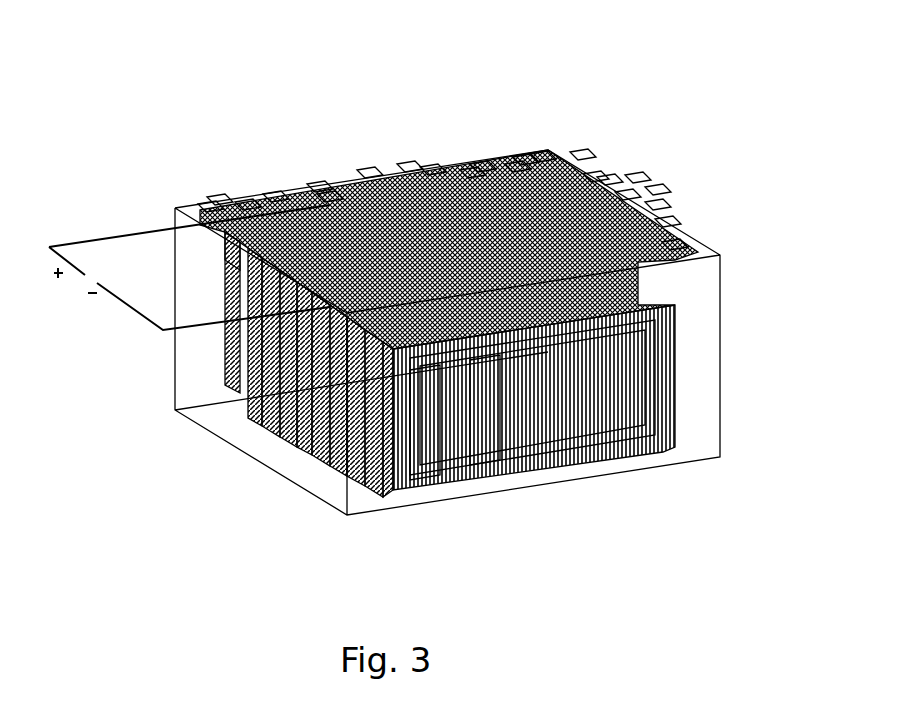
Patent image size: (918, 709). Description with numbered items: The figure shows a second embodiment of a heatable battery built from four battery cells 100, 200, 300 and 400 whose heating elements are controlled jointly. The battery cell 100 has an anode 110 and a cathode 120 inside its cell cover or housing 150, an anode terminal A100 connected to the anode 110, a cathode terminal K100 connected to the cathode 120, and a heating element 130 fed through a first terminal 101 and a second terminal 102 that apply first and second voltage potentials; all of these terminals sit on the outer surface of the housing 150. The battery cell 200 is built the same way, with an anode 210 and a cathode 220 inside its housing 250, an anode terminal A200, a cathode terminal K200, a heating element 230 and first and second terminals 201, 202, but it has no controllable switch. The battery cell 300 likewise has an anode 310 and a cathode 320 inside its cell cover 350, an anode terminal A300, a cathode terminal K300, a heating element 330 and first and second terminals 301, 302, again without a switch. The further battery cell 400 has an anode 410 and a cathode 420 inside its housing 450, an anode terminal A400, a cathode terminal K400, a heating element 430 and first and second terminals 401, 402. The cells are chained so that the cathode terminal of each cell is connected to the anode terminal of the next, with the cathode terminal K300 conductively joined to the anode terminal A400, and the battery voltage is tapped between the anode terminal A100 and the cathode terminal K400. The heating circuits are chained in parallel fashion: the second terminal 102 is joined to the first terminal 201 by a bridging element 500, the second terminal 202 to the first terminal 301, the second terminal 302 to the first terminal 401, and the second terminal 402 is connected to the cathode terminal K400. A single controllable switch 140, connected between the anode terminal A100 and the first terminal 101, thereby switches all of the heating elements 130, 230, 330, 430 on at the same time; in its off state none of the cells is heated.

The battery cell 100 is at (593, 177).
The first terminal 101 is at (317, 187).
The second terminal 102 is at (430, 170).
The anode 110 is at (230, 372).
The cathode 120 is at (270, 415).
The heating element 130 is at (253, 400).
The controllable switch 140 is at (327, 197).
The cell cover / housing 150 is at (580, 155).
The battery cell 200 is at (635, 178).
The first terminal 201 is at (470, 173).
The second terminal 202 is at (367, 173).
The anode 210 is at (320, 452).
The cathode 220 is at (288, 425).
The heating element 230 is at (304, 440).
The cell cover / housing 250 is at (625, 195).
The battery cell 300 is at (655, 205).
The first terminal 301 is at (407, 167).
The second terminal 302 is at (523, 160).
The anode 310 is at (338, 460).
The cathode 320 is at (355, 472).
The heating element 330 is at (374, 485).
The cell cover / housing 350 is at (665, 222).
The battery cell 400 is at (560, 485).
The first terminal 401 is at (487, 482).
The second terminal 402 is at (423, 490).
The anode 410 is at (613, 462).
The cathode 420 is at (388, 497).
The heating element 430 is at (667, 442).
The cell cover / housing 450 is at (722, 257).
The bridging element 500 is at (273, 197).
The cathode terminal K100 is at (515, 163).
The cathode terminal K200 is at (208, 207).
The cathode terminal K300 is at (655, 190).
The cathode terminal K400 is at (245, 205).
The anode terminal A100 is at (203, 203).
The anode terminal A200 is at (607, 180).
The anode terminal A300 is at (217, 200).
The anode terminal A400 is at (672, 245).